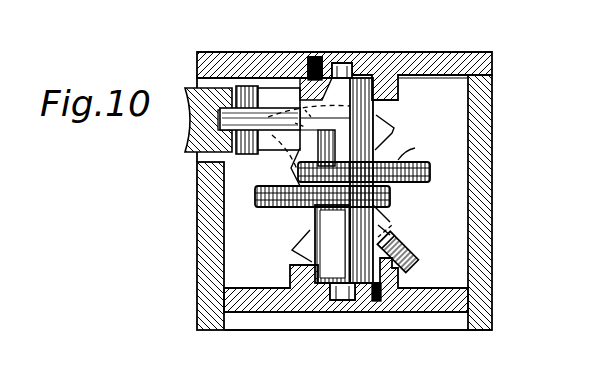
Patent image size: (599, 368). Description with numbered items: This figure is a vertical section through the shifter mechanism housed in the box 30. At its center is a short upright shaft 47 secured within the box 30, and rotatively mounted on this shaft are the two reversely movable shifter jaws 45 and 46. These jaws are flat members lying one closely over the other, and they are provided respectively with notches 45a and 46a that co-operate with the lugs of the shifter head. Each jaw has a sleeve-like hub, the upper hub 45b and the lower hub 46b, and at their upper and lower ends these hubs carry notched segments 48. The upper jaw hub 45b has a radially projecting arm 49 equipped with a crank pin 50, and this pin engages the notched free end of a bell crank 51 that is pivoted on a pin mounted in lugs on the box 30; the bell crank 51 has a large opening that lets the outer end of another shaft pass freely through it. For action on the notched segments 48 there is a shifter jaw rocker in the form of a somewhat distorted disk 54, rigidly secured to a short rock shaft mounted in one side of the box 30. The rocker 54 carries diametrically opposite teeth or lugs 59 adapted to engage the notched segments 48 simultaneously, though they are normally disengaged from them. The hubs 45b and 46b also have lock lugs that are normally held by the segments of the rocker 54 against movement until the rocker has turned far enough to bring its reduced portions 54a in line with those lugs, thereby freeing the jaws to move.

The box 30 is at (487, 201).
The shifter jaw 45 is at (431, 176).
The notch 45a is at (421, 148).
The sleeve-like hub 45b is at (378, 118).
The shifter jaw 46 is at (257, 200).
The notch 46a is at (288, 208).
The sleeve-like hub 46b is at (313, 252).
The short upright shaft 47 is at (360, 68).
The notched segments 48 is at (305, 86).
The radially projecting arm 49 is at (278, 132).
The crank pin 50 is at (248, 90).
The bell crank 51 is at (278, 96).
The shifter jaw rocker 54 is at (392, 216).
The reduced portions 54a is at (392, 231).
The teeth or lugs 59 is at (303, 94).